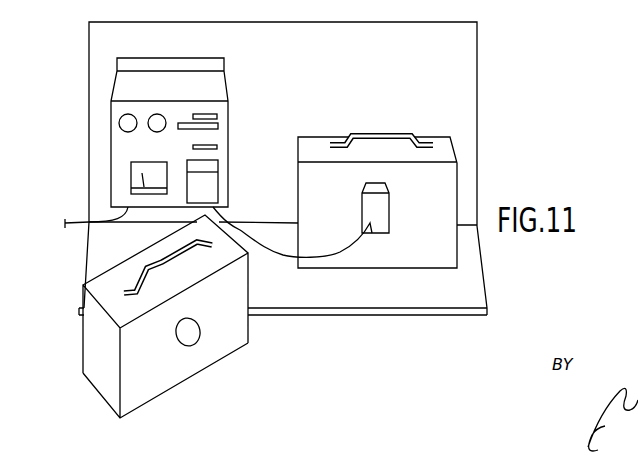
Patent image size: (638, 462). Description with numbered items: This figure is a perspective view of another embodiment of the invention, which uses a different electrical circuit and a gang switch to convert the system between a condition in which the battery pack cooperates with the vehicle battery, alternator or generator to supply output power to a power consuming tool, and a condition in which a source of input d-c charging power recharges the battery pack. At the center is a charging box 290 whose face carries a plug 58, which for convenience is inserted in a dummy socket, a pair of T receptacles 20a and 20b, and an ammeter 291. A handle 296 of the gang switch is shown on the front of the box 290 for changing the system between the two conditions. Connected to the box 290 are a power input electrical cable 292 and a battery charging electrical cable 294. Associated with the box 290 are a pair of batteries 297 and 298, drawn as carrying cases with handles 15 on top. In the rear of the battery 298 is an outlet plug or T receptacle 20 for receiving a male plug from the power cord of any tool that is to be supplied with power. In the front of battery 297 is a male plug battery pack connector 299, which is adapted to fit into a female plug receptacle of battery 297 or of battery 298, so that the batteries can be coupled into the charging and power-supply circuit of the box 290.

The carrying handle 15 is at (382, 132).
The outlet plug or T receptacle 20 is at (190, 337).
The T receptacle 20a is at (127, 126).
The T receptacle 20b is at (160, 117).
The plug 58 is at (209, 187).
The charging box 290 is at (159, 113).
The ammeter 291 is at (135, 166).
The power input electrical cable 292 is at (80, 222).
The battery charging electrical cable 294 is at (282, 257).
The handle 296 is at (217, 127).
The battery 297 is at (416, 249).
The battery 298 is at (186, 318).
The male plug battery pack connector 299 is at (382, 228).